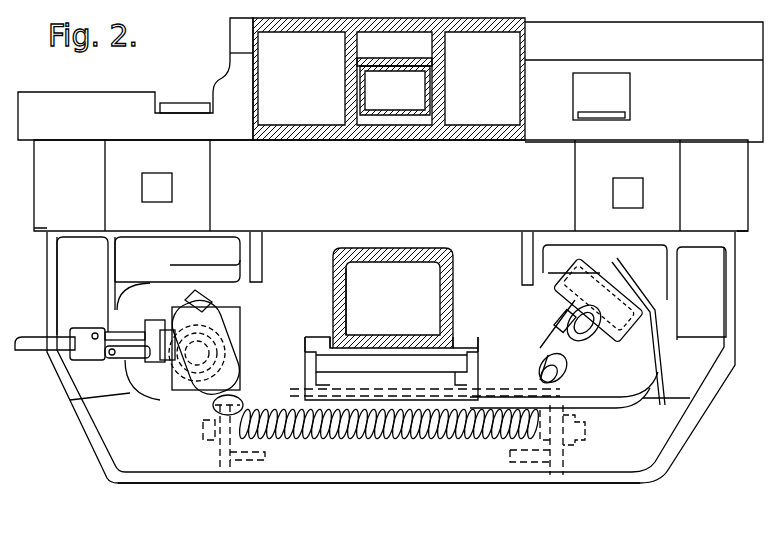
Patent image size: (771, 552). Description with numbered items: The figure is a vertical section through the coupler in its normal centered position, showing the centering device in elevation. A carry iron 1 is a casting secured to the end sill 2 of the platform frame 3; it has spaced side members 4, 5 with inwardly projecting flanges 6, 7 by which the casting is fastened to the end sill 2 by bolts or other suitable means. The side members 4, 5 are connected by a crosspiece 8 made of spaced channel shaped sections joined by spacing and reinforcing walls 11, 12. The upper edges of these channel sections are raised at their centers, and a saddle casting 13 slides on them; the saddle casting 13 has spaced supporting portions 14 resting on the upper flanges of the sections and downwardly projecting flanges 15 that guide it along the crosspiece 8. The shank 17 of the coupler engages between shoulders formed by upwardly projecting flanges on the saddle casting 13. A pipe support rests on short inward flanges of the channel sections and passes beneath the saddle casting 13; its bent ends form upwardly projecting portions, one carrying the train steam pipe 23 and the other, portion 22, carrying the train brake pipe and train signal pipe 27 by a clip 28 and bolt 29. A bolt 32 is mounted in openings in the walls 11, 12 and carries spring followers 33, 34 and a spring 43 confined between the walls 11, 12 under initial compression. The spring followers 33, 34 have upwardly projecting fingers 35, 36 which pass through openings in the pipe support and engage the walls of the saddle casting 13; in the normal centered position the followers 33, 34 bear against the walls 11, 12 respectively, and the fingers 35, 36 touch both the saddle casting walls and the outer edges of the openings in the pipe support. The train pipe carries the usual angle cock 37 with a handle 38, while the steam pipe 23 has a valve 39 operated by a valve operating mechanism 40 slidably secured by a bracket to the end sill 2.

The carry iron 1 is at (640, 483).
The end sill 2 is at (391, 185).
The platform frame 3 is at (213, 90).
The side member 4 is at (53, 284).
The side member 5 is at (713, 290).
The inwardly projecting flange 6 is at (264, 263).
The inwardly projecting flange 7 is at (522, 262).
The crosspiece 8 is at (390, 481).
The spacing and reinforcing wall 11 is at (565, 460).
The spacing and reinforcing wall 12 is at (215, 458).
The saddle casting 13 is at (470, 355).
The supporting portion 14 is at (348, 413).
The downwardly projecting flange 15 is at (358, 392).
The shank 17 is at (347, 310).
The upwardly projecting portion 22 is at (556, 351).
The train steam pipe 23 is at (215, 338).
The train signal pipe 27 is at (575, 372).
The clip 28 is at (588, 352).
The bolt 29 is at (562, 325).
The bolt 32 is at (590, 433).
The spring follower 33 is at (552, 462).
The spring follower 34 is at (238, 457).
The finger 35 is at (455, 398).
The finger 36 is at (330, 370).
The angle cock 37 is at (612, 335).
The handle 38 is at (667, 375).
The valve 39 is at (165, 370).
The valve operating mechanism 40 is at (40, 350).
The spring 43 is at (455, 445).